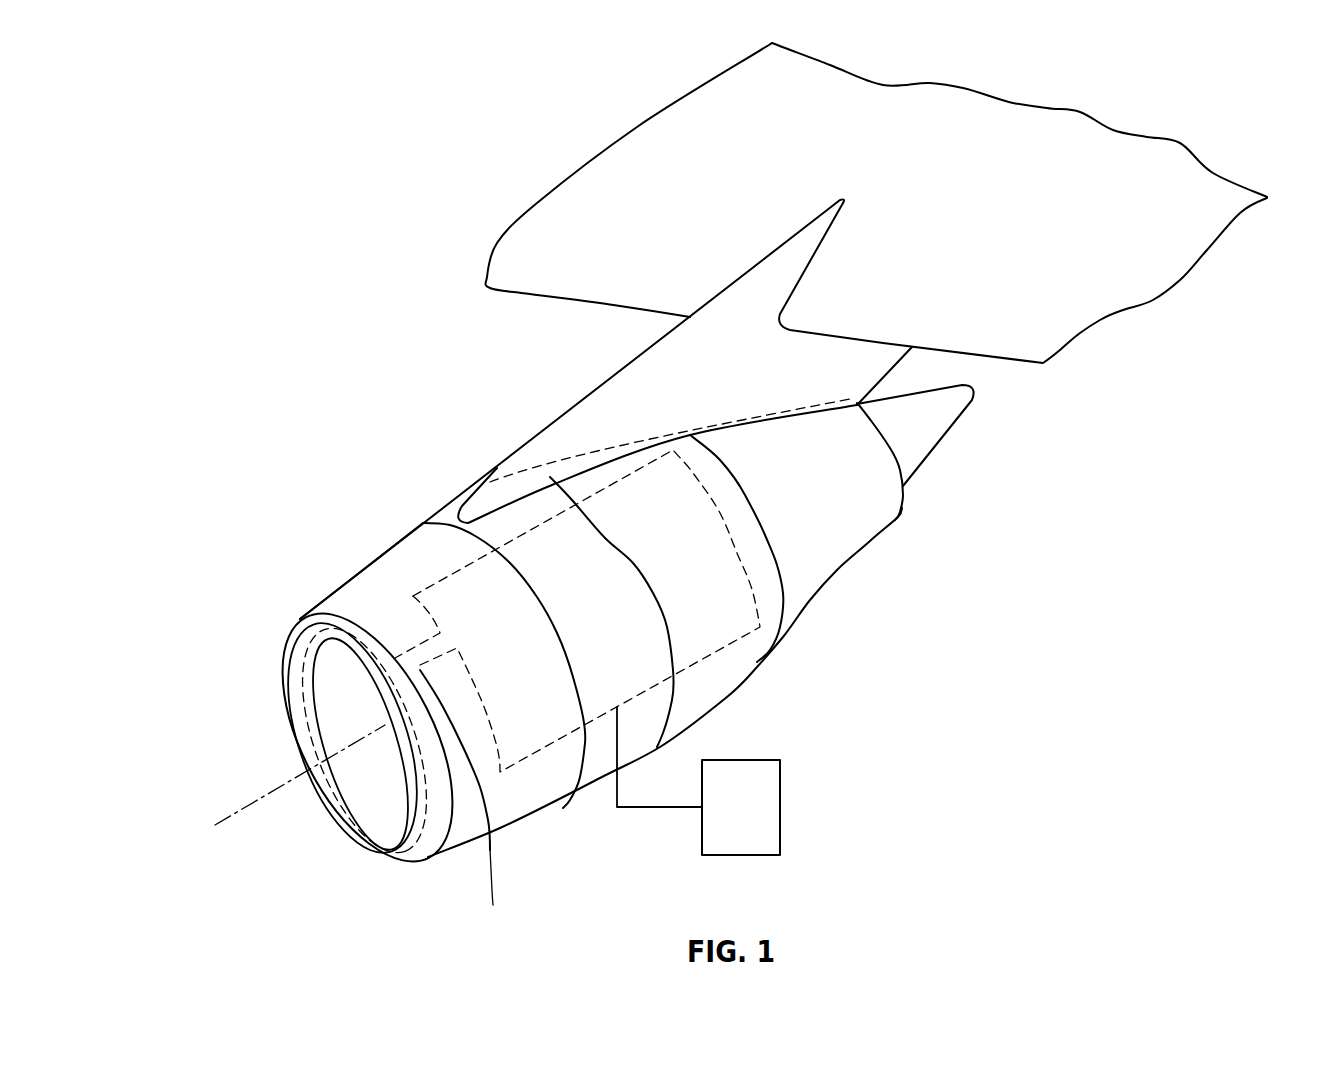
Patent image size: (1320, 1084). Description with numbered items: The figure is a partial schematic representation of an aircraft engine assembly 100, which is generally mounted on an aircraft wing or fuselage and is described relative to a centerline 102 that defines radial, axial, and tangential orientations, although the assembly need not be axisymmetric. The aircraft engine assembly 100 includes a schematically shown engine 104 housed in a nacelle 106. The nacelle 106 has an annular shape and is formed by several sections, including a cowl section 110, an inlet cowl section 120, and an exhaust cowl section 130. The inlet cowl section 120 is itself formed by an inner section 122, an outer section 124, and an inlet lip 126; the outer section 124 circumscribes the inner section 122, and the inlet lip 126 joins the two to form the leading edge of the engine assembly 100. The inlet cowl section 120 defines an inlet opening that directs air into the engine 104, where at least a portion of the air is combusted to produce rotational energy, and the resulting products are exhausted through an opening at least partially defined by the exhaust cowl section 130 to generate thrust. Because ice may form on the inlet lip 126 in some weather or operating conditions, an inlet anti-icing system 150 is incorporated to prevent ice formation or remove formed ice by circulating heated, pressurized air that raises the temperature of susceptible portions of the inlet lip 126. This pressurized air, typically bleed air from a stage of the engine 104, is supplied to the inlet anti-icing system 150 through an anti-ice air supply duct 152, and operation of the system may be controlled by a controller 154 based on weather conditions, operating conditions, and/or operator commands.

The aircraft engine assembly 100 is at (232, 411).
The centerline 102 is at (253, 798).
The engine 104 is at (733, 642).
The nacelle 106 is at (423, 521).
The cowl section 110 is at (727, 703).
The inlet cowl section 120 is at (533, 820).
The inner section 122 is at (387, 787).
The outer section 124 is at (497, 812).
The inlet lip 126 is at (387, 857).
The exhaust cowl section 130 is at (955, 432).
The inlet anti-icing system 150 is at (293, 632).
The anti-ice air supply duct 152 is at (497, 898).
The controller 154 is at (780, 805).